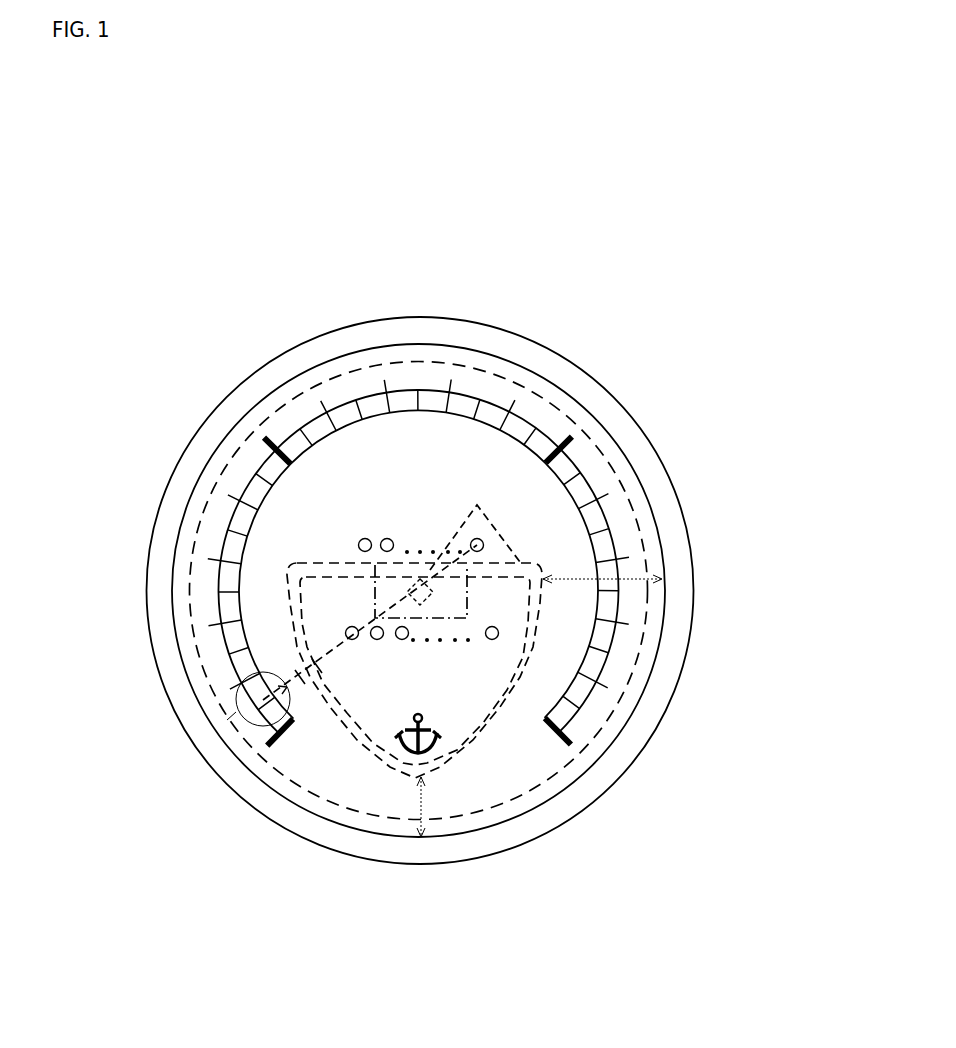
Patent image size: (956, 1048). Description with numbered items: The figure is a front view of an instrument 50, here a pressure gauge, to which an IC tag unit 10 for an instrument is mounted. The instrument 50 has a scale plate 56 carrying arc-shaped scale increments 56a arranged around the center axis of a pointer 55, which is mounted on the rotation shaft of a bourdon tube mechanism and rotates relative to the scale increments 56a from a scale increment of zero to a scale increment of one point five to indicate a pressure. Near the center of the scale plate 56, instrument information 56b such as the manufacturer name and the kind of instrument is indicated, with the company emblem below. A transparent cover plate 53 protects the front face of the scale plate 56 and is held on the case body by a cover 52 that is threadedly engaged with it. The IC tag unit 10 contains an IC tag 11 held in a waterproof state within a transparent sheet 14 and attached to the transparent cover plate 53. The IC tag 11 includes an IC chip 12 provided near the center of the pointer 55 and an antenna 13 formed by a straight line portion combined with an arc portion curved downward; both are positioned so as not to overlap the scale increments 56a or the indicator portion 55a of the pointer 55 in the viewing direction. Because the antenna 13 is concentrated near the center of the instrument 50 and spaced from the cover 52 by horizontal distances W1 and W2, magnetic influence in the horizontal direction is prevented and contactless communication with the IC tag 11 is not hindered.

The IC tag unit 10 is at (577, 427).
The IC tag 11 is at (310, 253).
The IC chip 12 is at (377, 600).
The antenna 13 is at (322, 563).
The sheet 14 is at (610, 720).
The instrument 50 is at (232, 379).
The cover 52 is at (198, 432).
The transparent cover plate 53 is at (258, 547).
The pointer 55 is at (310, 617).
The indicator portion 55a is at (227, 720).
The scale plate 56 is at (330, 650).
The scale increments 56a is at (250, 680).
The instrument information 56b is at (482, 549).
The horizontal distance W1 is at (425, 800).
The horizontal distance W2 is at (638, 575).